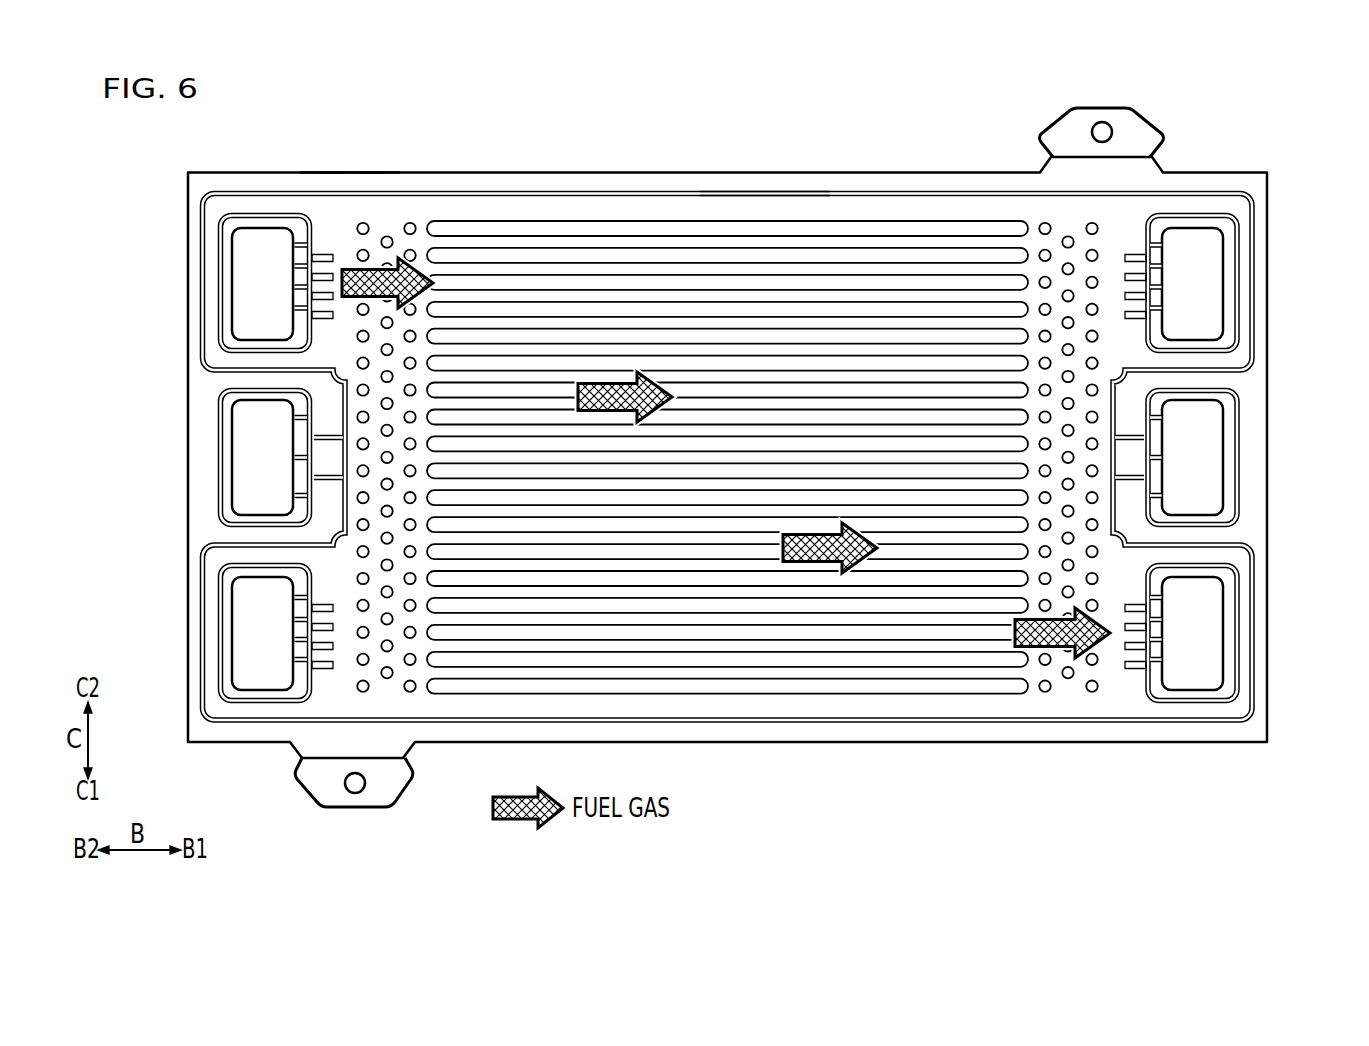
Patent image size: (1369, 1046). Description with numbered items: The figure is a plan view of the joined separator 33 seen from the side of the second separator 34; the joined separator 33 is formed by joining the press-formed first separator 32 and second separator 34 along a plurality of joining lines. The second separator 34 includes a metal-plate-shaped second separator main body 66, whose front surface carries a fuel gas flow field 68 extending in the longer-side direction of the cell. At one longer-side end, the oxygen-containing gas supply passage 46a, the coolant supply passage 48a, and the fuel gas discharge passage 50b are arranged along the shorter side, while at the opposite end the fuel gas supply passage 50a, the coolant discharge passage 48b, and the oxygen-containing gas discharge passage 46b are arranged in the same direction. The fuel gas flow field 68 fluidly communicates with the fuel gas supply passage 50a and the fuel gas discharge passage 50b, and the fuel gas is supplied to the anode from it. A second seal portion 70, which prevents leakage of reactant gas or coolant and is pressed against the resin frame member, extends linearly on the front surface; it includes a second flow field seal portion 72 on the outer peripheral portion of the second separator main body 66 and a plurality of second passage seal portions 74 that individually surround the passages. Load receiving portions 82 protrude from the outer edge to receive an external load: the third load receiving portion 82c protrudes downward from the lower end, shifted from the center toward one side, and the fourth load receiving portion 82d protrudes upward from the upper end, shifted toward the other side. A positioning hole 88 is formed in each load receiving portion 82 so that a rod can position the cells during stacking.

The first separator 32 is at (330, 173).
The joined separator 33 is at (390, 113).
The second separator 34 is at (370, 173).
The oxygen-containing gas supply passage 46a is at (1213, 279).
The oxygen-containing gas discharge passage 46b is at (245, 633).
The coolant supply passage 48a is at (1213, 463).
The coolant discharge passage 48b is at (245, 467).
The fuel gas supply passage 50a is at (245, 283).
The fuel gas discharge passage 50b is at (1213, 630).
The second separator main body 66 is at (890, 745).
The fuel gas flow field 68 is at (565, 245).
The second seal portion 70 is at (683, 191).
The second flow field seal portion 72 is at (765, 195).
The second passage seal portion 74 is at (217, 240).
The load receiving portion 82 is at (730, 458).
The third load receiving portion 82c is at (318, 806).
The fourth load receiving portion 82d is at (1137, 110).
The positioning hole 88 is at (1100, 128).